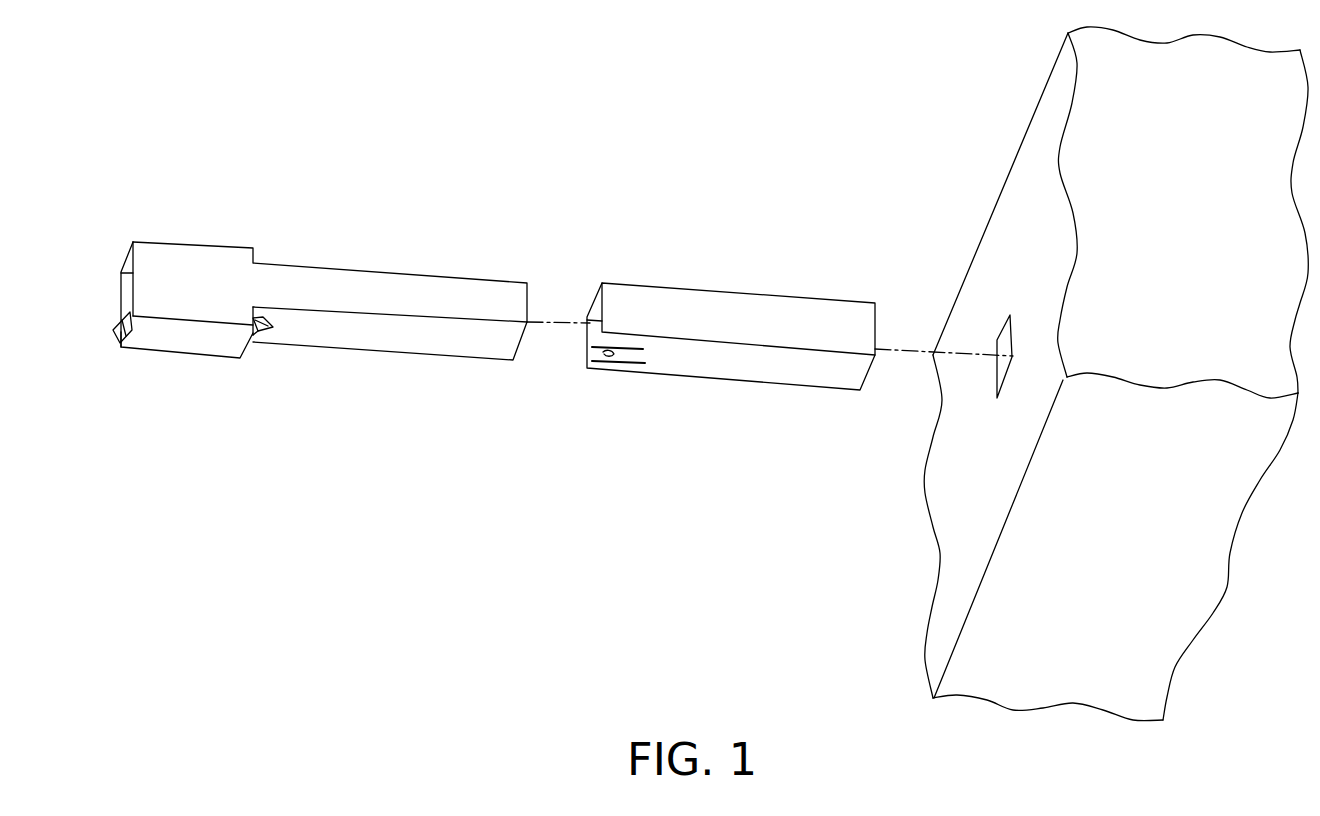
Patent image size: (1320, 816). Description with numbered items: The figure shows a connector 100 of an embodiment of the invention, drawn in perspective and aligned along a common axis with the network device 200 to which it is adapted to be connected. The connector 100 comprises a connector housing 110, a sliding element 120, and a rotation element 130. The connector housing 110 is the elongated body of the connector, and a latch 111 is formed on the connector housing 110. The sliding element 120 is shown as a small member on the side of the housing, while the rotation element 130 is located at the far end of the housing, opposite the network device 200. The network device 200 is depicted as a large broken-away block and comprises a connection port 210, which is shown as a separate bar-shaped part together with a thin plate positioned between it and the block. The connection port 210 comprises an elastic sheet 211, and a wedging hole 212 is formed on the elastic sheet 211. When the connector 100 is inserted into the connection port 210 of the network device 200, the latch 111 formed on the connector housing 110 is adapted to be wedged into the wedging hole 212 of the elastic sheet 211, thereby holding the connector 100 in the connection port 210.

The connector 100 is at (374, 238).
The connector housing 110 is at (398, 338).
The latch 111 is at (266, 338).
The sliding element 120 is at (250, 336).
The rotation element 130 is at (122, 325).
The network device 200 is at (963, 482).
The connection port 210 is at (1005, 327).
The elastic sheet 211 is at (630, 353).
The wedging hole 212 is at (603, 358).